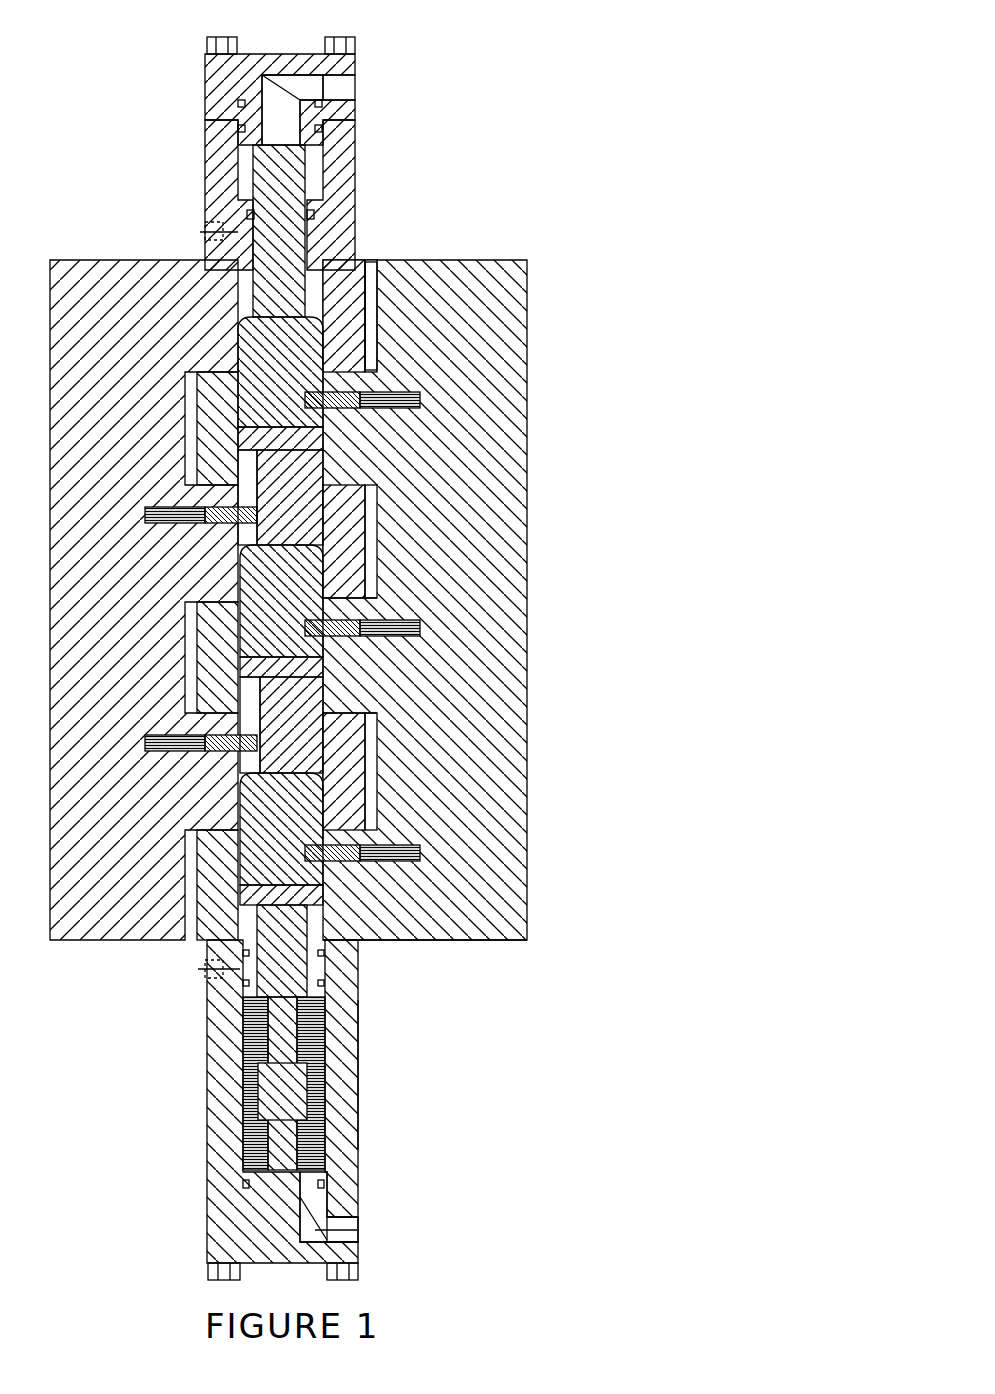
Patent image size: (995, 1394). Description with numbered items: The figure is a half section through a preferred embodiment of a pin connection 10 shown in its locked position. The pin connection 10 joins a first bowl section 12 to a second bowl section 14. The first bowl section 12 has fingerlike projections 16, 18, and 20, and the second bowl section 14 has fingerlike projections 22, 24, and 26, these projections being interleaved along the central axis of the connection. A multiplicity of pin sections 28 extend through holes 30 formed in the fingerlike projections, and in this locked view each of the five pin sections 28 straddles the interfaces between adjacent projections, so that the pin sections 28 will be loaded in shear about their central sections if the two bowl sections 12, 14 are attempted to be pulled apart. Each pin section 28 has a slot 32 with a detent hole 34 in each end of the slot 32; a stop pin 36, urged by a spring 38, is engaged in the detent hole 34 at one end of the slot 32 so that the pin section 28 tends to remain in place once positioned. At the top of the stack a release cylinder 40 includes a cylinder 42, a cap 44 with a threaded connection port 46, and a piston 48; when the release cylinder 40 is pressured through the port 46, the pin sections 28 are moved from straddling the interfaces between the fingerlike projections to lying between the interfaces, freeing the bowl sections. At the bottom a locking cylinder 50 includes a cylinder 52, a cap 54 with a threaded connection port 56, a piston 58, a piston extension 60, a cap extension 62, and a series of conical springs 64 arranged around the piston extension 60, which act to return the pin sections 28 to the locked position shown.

The pin connection 10 is at (527, 227).
The first bowl section 12 is at (527, 362).
The second bowl section 14 is at (62, 268).
The fingerlike projection 16 is at (355, 435).
The fingerlike projection 18 is at (360, 693).
The fingerlike projection 20 is at (363, 925).
The fingerlike projection 22 is at (368, 328).
The fingerlike projection 24 is at (365, 498).
The fingerlike projection 26 is at (377, 730).
The pin section 28 is at (313, 472).
The hole 30 is at (320, 293).
The slot 32 is at (317, 597).
The detent hole 34 is at (310, 570).
The stop pin 36 is at (367, 615).
The spring 38 is at (427, 632).
The release cylinder 40 is at (357, 118).
The cylinder 42 is at (350, 220).
The cap 44 is at (350, 63).
The threaded connection port 46 is at (310, 85).
The piston 48 is at (305, 197).
The locking cylinder 50 is at (362, 1075).
The cylinder 52 is at (355, 1007).
The cap 54 is at (365, 1205).
The threaded connection port 56 is at (363, 1237).
The piston 58 is at (323, 985).
The piston extension 60 is at (323, 1035).
The cap extension 62 is at (323, 1150).
The conical springs 64 is at (323, 1108).